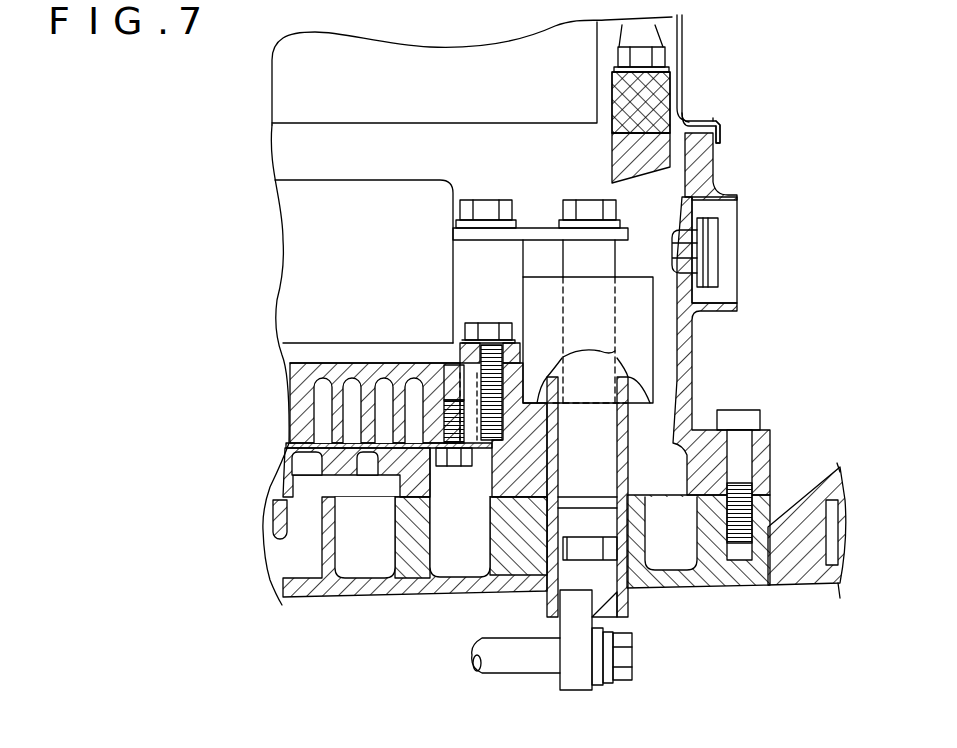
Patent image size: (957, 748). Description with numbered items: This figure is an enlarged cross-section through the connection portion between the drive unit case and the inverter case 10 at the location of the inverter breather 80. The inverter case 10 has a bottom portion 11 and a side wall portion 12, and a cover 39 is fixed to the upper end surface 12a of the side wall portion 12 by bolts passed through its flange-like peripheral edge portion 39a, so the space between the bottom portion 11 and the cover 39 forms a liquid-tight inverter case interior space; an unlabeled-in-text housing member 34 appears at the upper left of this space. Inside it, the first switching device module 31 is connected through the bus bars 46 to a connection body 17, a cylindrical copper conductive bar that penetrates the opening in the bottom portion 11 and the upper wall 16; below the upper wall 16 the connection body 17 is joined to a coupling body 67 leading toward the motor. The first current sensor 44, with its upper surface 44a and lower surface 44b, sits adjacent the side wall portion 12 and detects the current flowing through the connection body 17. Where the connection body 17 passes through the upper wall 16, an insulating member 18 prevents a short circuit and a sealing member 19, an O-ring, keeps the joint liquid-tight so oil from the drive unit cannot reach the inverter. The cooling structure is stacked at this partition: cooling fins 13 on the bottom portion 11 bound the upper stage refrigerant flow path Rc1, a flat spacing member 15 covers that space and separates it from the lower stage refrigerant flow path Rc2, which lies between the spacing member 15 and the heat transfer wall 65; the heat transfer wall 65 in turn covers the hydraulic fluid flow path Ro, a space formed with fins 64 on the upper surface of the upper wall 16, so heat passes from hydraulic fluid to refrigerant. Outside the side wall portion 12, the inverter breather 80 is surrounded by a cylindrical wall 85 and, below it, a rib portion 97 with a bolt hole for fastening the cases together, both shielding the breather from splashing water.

The inverter case 10 is at (716, 163).
The bottom portion 11 is at (317, 357).
The side wall portion 12 is at (691, 342).
The upper end surface 12a is at (692, 128).
The cooling fins 13 is at (340, 427).
The spacing member 15 is at (290, 458).
The upper wall 16 is at (732, 582).
The connection body 17 is at (587, 656).
The insulating member 18 is at (628, 600).
The sealing member 19 is at (647, 527).
The first switching device module 31 is at (303, 190).
The case 34 is at (280, 85).
The cover 39 is at (686, 40).
The flange-like peripheral edge portion 39a is at (722, 128).
The first current sensor 44 is at (655, 352).
The upper surface 44a is at (544, 277).
The lower surface 44b is at (648, 400).
The bus bars 46 is at (538, 228).
The fins 64 is at (322, 547).
The heat transfer wall 65 is at (427, 482).
The coupling body 67 is at (507, 640).
The inverter breather 80 is at (721, 240).
The cylindrical wall 85 is at (737, 300).
The rib portion 97 is at (762, 443).
The upper stage refrigerant flow path Rc1 is at (352, 385).
The lower stage refrigerant flow path Rc2 is at (338, 472).
The hydraulic fluid flow path Ro is at (367, 560).